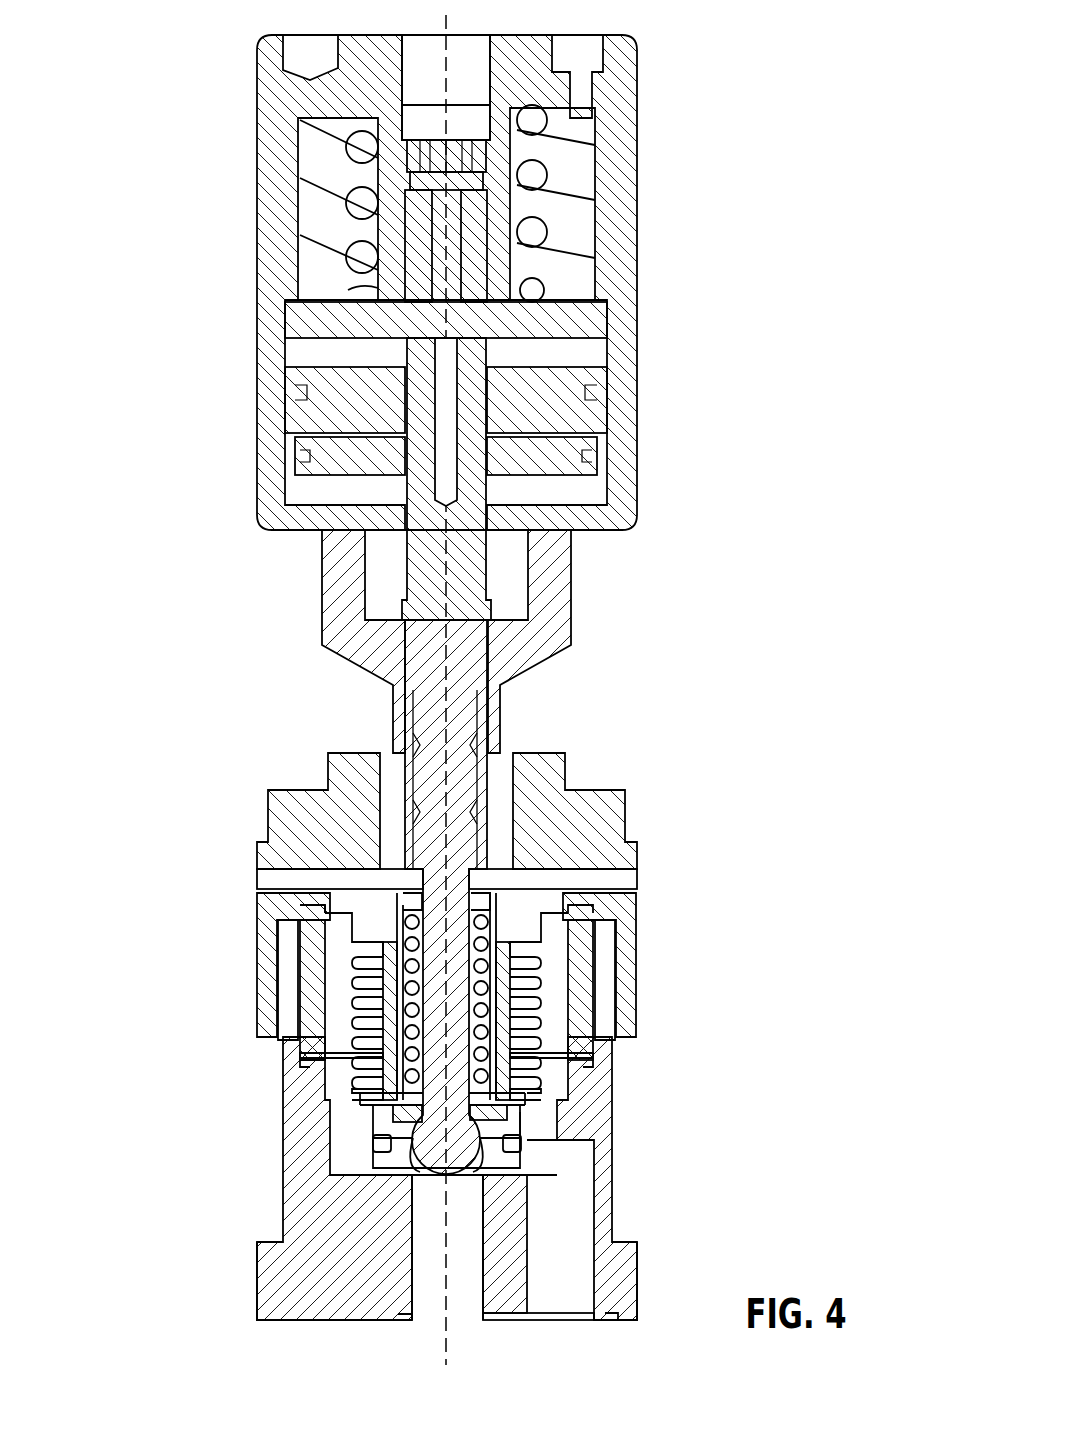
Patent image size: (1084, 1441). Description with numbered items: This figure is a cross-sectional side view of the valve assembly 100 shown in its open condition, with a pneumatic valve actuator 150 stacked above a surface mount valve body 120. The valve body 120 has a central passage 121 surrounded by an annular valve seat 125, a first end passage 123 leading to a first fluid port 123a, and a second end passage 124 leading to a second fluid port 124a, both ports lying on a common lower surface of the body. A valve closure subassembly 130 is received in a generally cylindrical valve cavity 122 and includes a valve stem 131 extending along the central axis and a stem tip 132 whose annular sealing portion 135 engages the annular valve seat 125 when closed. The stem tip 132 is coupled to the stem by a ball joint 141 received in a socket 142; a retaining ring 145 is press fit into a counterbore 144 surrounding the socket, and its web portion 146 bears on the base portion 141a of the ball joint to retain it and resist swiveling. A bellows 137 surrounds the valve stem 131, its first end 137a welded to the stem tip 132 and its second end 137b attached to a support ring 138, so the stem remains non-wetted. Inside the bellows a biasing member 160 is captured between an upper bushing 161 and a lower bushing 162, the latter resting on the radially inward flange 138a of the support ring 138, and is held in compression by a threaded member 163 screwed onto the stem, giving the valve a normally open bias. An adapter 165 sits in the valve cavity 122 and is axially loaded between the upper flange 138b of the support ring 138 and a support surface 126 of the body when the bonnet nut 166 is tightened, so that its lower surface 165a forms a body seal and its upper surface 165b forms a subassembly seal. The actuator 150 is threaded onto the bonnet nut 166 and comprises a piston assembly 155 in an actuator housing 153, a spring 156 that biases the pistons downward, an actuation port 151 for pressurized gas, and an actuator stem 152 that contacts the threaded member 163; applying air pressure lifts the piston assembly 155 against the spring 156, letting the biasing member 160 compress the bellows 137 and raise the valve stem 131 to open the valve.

The valve assembly 100 is at (782, 156).
The valve body 120 is at (612, 1130).
The central passage 121 is at (562, 918).
The valve cavity wall 122 is at (300, 965).
The first end passage 123 is at (413, 1248).
The first fluid port 123a is at (402, 1320).
The second end passage 124 is at (612, 1218).
The second fluid port 124a is at (610, 1318).
The annular valve seat 125 is at (562, 1150).
The support surface 126 is at (352, 1048).
The valve closure subassembly 130 is at (332, 1150).
The valve stem 131 is at (497, 1000).
The stem tip 132 is at (410, 1150).
The annular sealing portion 135 is at (380, 1150).
The bellows 137 is at (297, 1013).
The first end of bellows 137a is at (545, 1095).
The second end of bellows 137b is at (560, 952).
The support ring 138 is at (540, 1000).
The radially inward flange 138a is at (556, 1058).
The upper flange 138b is at (318, 910).
The ball joint 141 is at (560, 1090).
The base portion of ball joint 141a is at (436, 1165).
The socket 142 is at (565, 1127).
The counterbore 144 is at (378, 1140).
The retaining ring 145 is at (380, 1118).
The web portion 146 is at (375, 1093).
The valve actuator 150 is at (664, 397).
The actuation port 151 is at (470, 42).
The actuator stem 152 is at (463, 715).
The actuator housing 153 is at (625, 332).
The piston assembly 155 is at (282, 335).
The spring 156 is at (357, 143).
The biasing member 160 is at (573, 838).
The upper bushing 161 is at (486, 898).
The lower bushing 162 is at (322, 1000).
The threaded member 163 is at (422, 870).
The adapter 165 is at (268, 869).
The lower surface of adapter 165a is at (305, 1062).
The upper surface of adapter 165b is at (308, 930).
The bonnet nut 166 is at (293, 807).